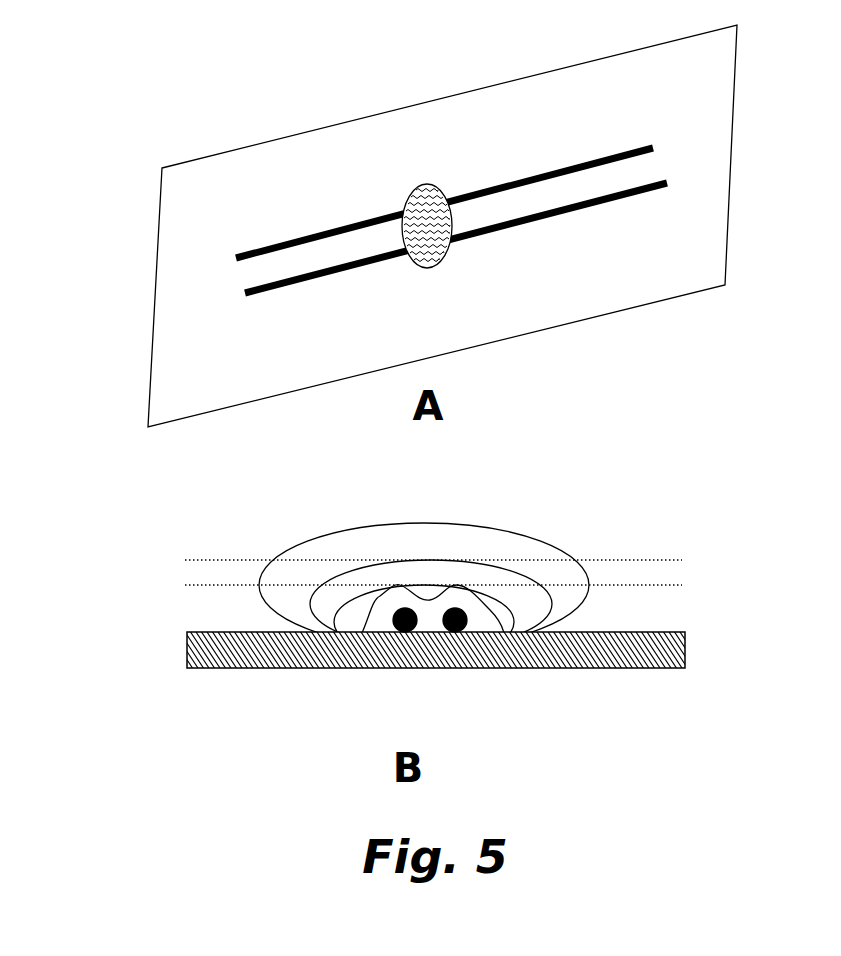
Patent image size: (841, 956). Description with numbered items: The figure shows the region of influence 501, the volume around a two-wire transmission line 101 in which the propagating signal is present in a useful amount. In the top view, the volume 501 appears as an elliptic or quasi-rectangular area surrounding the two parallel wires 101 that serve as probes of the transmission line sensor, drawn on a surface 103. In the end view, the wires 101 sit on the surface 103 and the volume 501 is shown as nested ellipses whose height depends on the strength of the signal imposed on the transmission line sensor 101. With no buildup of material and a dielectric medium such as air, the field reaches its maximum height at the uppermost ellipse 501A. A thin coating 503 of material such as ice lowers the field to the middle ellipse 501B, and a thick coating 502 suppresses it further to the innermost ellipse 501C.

The two-wire transmission line 101 is at (667, 183).
The substrate 103 is at (148, 355).
The region of influence 501 is at (426, 186).
The uppermost ellipse 501A is at (274, 560).
The middle ellipse 501B is at (345, 573).
The innermost ellipse 501C is at (360, 593).
The thick coating 502 is at (672, 560).
The thin coating 503 is at (672, 585).